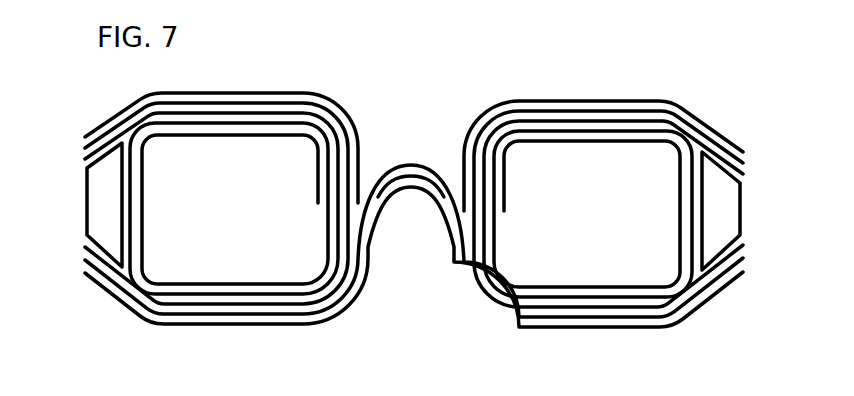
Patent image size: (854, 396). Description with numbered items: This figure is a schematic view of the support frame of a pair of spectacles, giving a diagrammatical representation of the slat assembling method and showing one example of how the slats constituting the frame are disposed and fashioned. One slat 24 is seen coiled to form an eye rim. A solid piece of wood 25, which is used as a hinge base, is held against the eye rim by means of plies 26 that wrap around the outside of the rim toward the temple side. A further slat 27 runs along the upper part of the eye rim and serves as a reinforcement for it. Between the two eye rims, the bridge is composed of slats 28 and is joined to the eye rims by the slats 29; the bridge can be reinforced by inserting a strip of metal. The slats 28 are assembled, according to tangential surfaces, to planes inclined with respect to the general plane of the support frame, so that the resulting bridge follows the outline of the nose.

The slat 24 is at (238, 123).
The solid piece of wood 25 is at (103, 238).
The plies 26 is at (140, 107).
The slat 27 is at (358, 118).
The slats 28 is at (421, 178).
The slats 29 is at (358, 280).